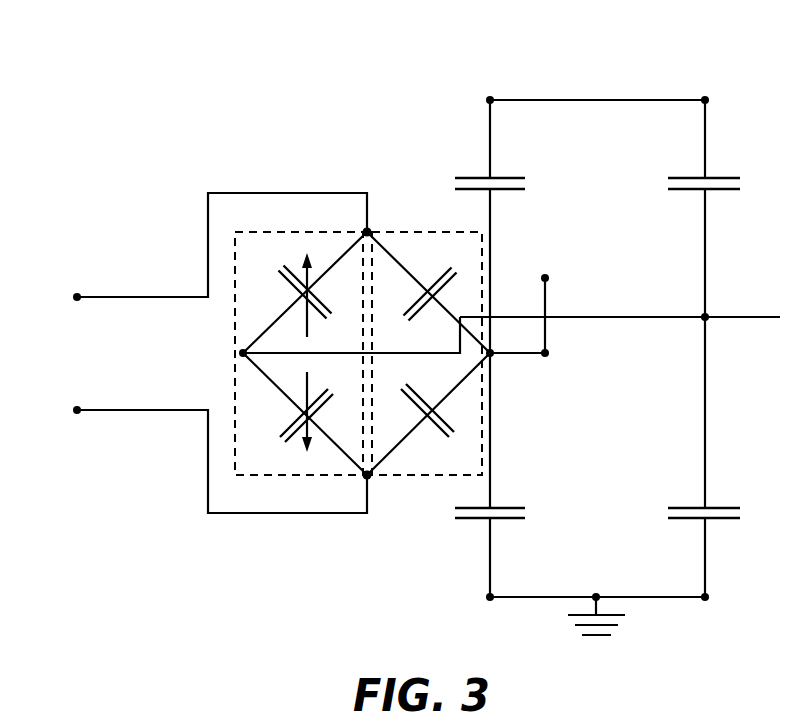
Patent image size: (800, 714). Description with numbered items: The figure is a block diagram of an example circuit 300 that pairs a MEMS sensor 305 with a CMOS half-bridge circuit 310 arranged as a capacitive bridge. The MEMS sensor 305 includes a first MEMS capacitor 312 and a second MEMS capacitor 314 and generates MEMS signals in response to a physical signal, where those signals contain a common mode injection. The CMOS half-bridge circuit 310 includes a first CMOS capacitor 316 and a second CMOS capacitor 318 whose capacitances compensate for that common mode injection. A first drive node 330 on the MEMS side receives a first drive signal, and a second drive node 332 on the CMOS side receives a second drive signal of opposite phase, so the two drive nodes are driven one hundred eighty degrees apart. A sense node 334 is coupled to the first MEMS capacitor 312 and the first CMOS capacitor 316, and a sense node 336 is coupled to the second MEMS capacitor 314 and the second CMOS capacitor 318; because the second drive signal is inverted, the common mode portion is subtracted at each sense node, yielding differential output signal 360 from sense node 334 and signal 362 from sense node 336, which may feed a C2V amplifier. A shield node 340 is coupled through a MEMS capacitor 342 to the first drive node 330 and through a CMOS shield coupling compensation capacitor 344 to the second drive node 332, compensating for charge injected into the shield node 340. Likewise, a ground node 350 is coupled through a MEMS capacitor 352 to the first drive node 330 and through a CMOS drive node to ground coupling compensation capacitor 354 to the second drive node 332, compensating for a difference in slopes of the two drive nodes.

The circuit 300 is at (150, 42).
The MEMS sensor 305 is at (247, 478).
The CMOS half-bridge circuit 310 is at (398, 477).
The first MEMS capacitor 312 is at (290, 267).
The second MEMS capacitor 314 is at (292, 440).
The first CMOS capacitor 316 is at (447, 267).
The second CMOS capacitor 318 is at (447, 440).
The first drive node 330 is at (710, 322).
The second drive node 332 is at (552, 280).
The sense node 334 is at (365, 230).
The sense node 336 is at (367, 478).
The shield node 340 is at (640, 81).
The capacitor 342 is at (718, 190).
The shield coupling compensation capacitor 344 is at (505, 190).
The ground node 350 is at (710, 600).
The capacitor 352 is at (718, 520).
The drive node to ground coupling compensation capacitor 354 is at (505, 520).
The signal 360 is at (80, 300).
The signal 362 is at (80, 413).